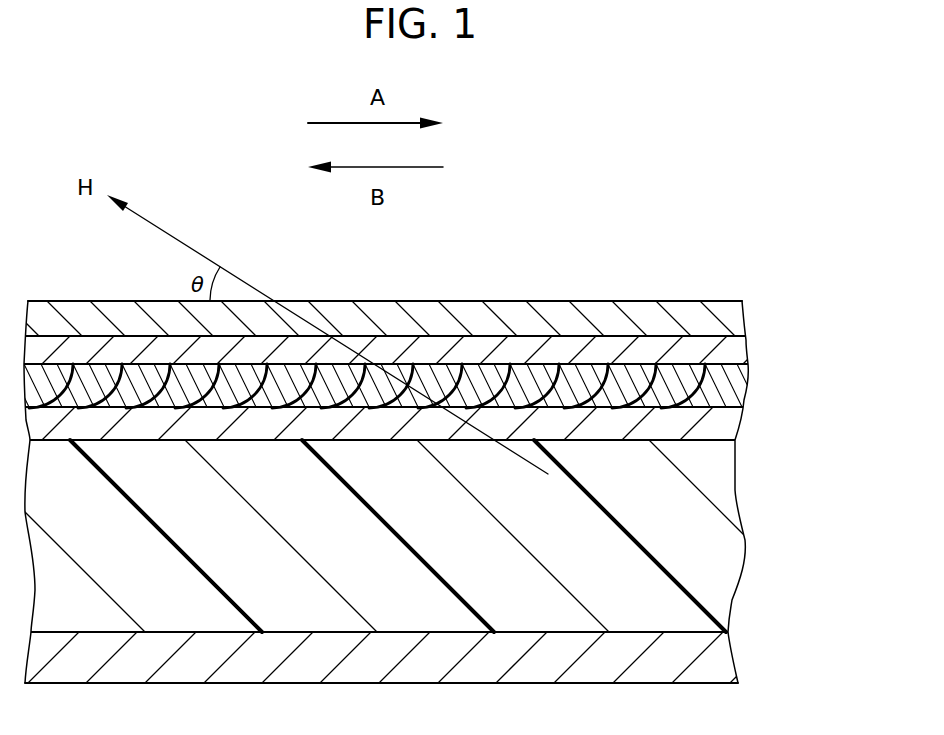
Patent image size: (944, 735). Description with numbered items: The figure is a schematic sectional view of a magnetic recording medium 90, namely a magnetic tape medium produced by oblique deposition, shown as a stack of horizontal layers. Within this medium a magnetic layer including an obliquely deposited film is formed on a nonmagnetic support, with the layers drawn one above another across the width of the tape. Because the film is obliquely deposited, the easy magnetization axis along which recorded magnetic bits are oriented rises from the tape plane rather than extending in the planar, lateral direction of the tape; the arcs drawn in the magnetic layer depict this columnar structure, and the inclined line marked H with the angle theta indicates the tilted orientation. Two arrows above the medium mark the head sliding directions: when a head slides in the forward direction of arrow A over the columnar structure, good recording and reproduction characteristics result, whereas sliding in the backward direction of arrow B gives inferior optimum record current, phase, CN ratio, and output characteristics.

The recording medium 90 is at (606, 189).